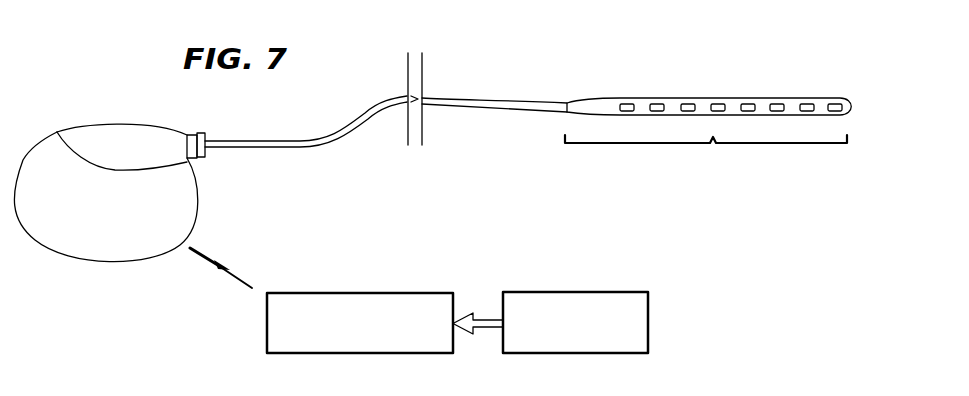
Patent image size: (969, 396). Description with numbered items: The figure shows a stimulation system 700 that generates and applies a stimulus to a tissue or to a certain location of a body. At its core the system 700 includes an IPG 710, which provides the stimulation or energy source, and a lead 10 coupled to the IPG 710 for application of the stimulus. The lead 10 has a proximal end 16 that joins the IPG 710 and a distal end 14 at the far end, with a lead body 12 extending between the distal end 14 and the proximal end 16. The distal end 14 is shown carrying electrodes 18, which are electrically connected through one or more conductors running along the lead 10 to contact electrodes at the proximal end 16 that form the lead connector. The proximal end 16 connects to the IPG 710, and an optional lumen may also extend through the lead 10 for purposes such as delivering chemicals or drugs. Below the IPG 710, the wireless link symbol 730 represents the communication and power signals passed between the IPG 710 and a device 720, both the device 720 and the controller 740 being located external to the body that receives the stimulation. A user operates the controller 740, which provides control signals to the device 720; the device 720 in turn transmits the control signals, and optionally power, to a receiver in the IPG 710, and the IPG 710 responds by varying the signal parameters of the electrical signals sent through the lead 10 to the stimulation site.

The stimulation system 700 is at (629, 45).
The IPG 710 is at (106, 123).
The device 720 is at (370, 292).
The wireless link symbol 730 is at (230, 269).
The controller 740 is at (618, 291).
The lead 10 is at (454, 141).
The lead body 12 is at (440, 95).
The distal end 14 is at (706, 155).
The proximal end 16 is at (251, 140).
The electrodes 18 is at (660, 102).